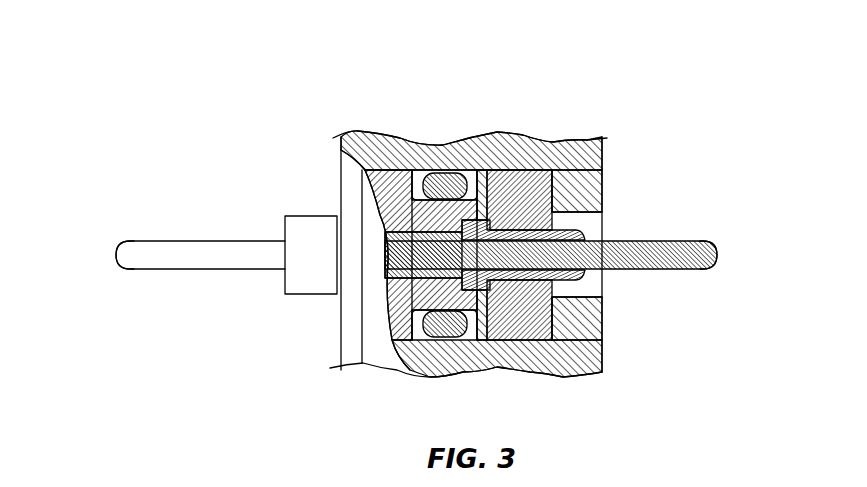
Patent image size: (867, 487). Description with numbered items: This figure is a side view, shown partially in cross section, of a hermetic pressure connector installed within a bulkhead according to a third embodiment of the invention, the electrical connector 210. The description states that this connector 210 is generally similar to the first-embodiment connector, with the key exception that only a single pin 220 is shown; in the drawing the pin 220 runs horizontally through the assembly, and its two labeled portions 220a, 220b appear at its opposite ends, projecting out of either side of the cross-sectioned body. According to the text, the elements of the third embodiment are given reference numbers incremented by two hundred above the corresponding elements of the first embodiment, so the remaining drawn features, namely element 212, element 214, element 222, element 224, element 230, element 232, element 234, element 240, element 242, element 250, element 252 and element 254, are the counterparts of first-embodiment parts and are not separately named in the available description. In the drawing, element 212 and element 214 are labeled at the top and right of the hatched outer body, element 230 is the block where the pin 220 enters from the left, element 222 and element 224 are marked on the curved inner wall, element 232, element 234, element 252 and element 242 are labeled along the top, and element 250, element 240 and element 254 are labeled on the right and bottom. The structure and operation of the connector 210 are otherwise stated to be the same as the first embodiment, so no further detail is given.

The electrical connector 210 is at (187, 90).
The housing 212 is at (355, 135).
The housing end wall 214 is at (552, 191).
The pin 220 is at (162, 240).
The first end of shaft 220a is at (117, 254).
The second end of shaft 220b is at (718, 253).
The bushing 222 is at (400, 282).
The flared inner surface 224 is at (395, 305).
The collar 230 is at (313, 216).
The spacer plate 232 is at (483, 212).
The O-ring seal 234 is at (448, 188).
The lower bearing block 240 is at (560, 327).
The upper bearing block 242 is at (507, 168).
The retaining sleeve 250 is at (585, 276).
The bearing face 252 is at (522, 170).
The housing bottom wall 254 is at (498, 357).